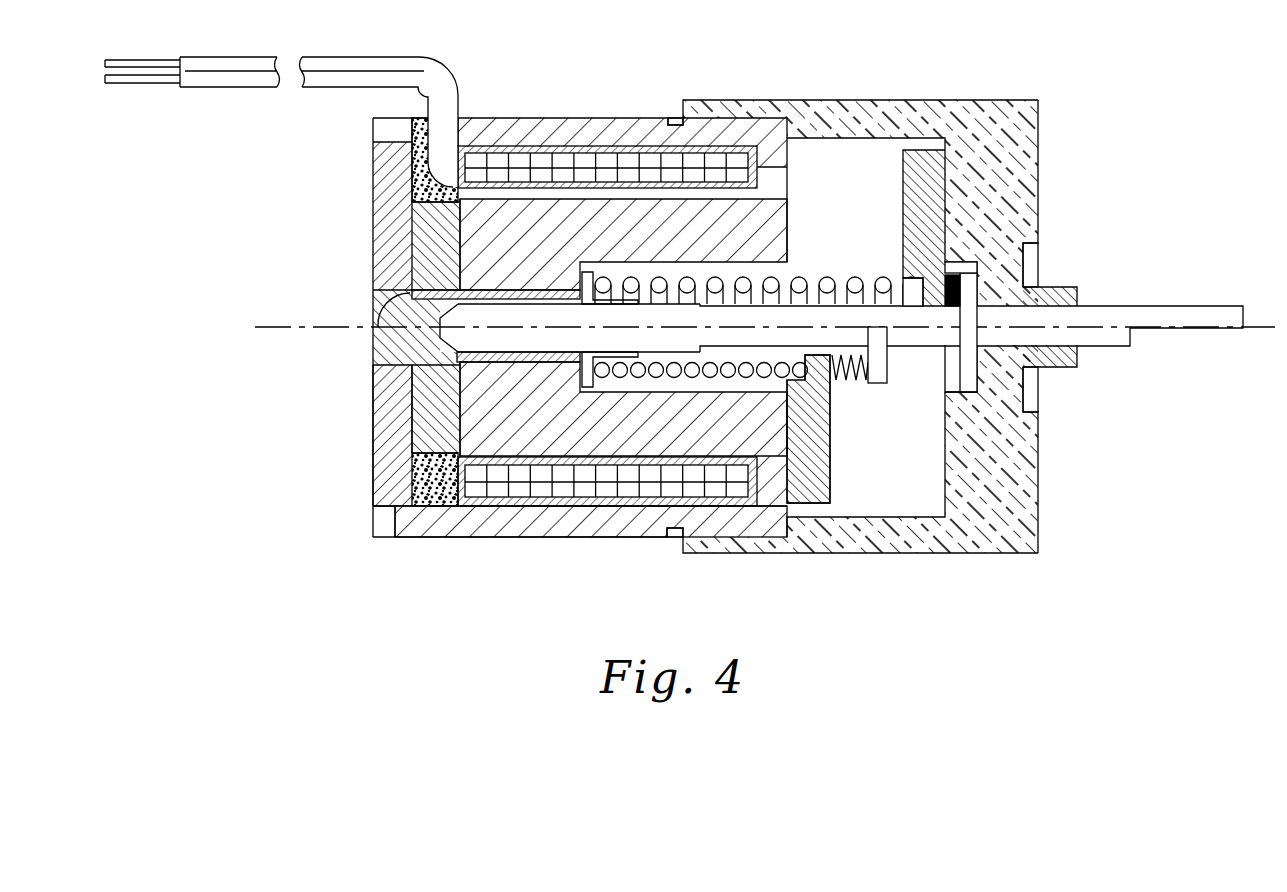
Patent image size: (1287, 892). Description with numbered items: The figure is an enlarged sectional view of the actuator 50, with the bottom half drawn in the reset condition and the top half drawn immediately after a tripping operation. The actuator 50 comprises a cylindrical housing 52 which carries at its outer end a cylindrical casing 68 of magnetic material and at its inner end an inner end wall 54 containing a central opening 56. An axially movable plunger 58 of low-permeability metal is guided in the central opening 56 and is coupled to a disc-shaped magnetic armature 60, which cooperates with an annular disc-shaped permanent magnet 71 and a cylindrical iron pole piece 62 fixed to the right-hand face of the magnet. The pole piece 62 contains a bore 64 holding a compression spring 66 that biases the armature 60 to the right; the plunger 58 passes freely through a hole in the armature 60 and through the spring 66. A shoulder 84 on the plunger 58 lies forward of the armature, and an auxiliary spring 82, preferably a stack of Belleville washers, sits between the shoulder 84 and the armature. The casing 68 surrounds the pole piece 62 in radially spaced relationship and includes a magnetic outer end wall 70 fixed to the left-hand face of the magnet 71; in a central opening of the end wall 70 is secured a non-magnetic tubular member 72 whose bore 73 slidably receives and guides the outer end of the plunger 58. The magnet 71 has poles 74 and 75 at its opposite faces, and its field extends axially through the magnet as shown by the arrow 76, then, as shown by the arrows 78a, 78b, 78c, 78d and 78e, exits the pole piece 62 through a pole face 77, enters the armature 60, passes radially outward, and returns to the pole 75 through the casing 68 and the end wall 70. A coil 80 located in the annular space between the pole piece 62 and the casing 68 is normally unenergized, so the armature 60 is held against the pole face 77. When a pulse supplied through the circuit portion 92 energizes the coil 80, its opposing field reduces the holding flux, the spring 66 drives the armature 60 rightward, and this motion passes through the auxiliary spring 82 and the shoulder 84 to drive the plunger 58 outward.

The actuator 50 is at (888, 319).
The housing 52 is at (946, 566).
The inner end wall 54 is at (1038, 442).
The central opening 56 is at (1058, 337).
The plunger 58 is at (1202, 318).
The armature 60 is at (903, 195).
The pole piece 62 is at (485, 230).
The bore 64 is at (775, 272).
The compression spring 66 is at (690, 297).
The casing 68 is at (630, 110).
The outer end wall 70 is at (368, 481).
The permanent magnet 71 is at (415, 453).
The tubular member 72 is at (395, 343).
The bore 73 is at (503, 305).
The pole 74 is at (440, 277).
The pole 75 is at (410, 223).
The arrow 76 is at (378, 308).
The pole face 77 is at (750, 418).
The arrow 78a is at (655, 418).
The arrow 78b is at (808, 458).
The arrow 78c is at (640, 522).
The arrow 78d is at (390, 500).
The arrow 78e is at (420, 420).
The coil 80 is at (519, 168).
The auxiliary spring 82 is at (952, 310).
The shoulder 84 is at (920, 350).
The circuit portion 92 is at (148, 85).